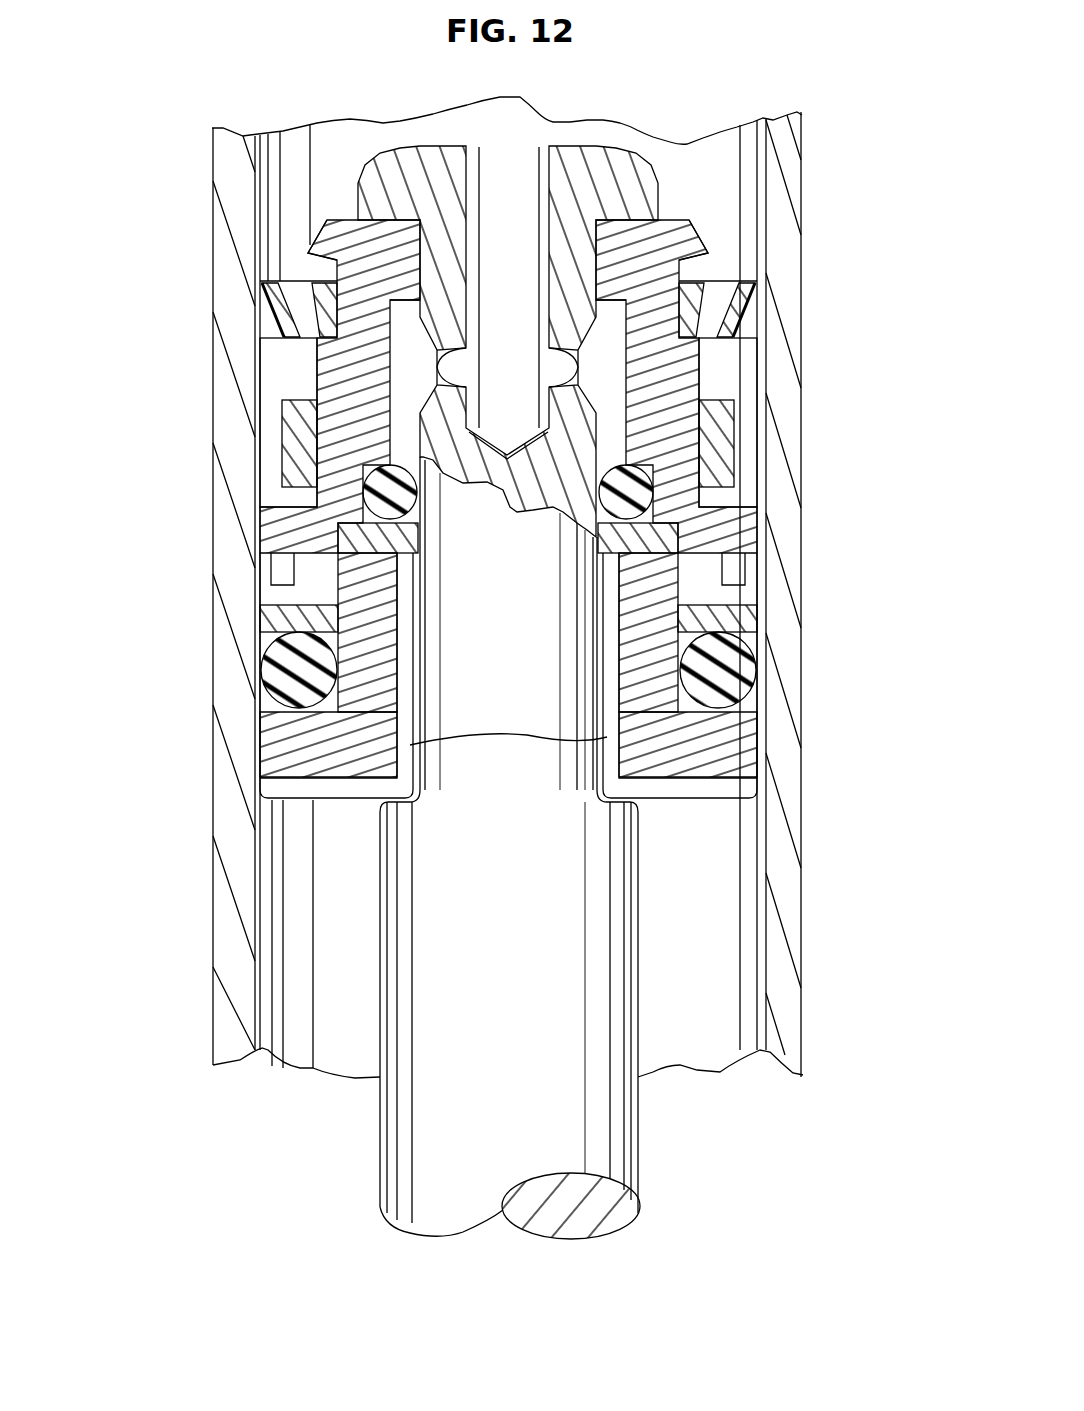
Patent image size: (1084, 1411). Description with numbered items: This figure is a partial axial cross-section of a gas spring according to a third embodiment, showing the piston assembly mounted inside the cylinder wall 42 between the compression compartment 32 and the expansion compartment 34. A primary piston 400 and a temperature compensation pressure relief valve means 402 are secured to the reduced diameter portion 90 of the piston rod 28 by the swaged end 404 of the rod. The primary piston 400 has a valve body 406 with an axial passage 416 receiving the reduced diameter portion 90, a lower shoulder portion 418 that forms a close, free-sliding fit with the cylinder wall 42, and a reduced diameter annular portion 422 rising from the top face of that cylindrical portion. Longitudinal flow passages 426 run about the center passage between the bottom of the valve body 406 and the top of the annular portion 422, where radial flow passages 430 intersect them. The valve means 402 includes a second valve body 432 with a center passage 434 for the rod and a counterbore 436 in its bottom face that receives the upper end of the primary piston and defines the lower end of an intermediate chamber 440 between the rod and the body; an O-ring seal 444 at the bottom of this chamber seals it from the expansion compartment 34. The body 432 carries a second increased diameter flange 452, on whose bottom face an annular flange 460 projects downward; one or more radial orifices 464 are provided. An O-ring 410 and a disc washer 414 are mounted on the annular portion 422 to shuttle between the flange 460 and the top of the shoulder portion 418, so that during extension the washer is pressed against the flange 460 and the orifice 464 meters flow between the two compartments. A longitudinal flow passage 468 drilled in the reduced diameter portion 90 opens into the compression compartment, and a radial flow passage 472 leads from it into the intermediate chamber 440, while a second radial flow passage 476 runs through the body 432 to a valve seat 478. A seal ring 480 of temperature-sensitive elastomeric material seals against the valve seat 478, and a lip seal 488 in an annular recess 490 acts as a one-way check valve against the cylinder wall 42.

The piston rod 28 is at (605, 1140).
The compression compartment 32 is at (726, 143).
The expansion compartment 34 is at (718, 970).
The cylinder wall 42 is at (780, 900).
The reduced diameter portion 90 is at (470, 782).
The primary piston 400 is at (190, 778).
The temperature compensation pressure relief valve means 402 is at (190, 437).
The swaged end 404 is at (392, 188).
The valve body 406 is at (660, 722).
The O-ring 410 is at (747, 675).
The disc washer 414 is at (757, 617).
The axial passage 416 is at (398, 688).
The lower shoulder portion 418 is at (330, 750).
The reduced diameter annular portion 422 is at (373, 635).
The longitudinal flow passages 426 is at (413, 712).
The radial flow passages 430 is at (337, 572).
The valve body 432 is at (352, 375).
The center passage 434 is at (712, 247).
The counterbore 436 is at (748, 524).
The intermediate chamber 440 is at (400, 335).
The O-ring seal 444 is at (380, 548).
The second increased diameter flange 452 is at (372, 500).
The annular flange 460 is at (290, 585).
The radially extending orifices 464 is at (748, 580).
The longitudinal flow passage 468 is at (492, 270).
The radial flow passage 472 is at (590, 372).
The second radial flow passage 476 is at (692, 443).
The valve seat 478 is at (700, 403).
The seal ring 480 is at (732, 470).
The lip seal 488 is at (748, 318).
The annular recess 490 is at (700, 286).